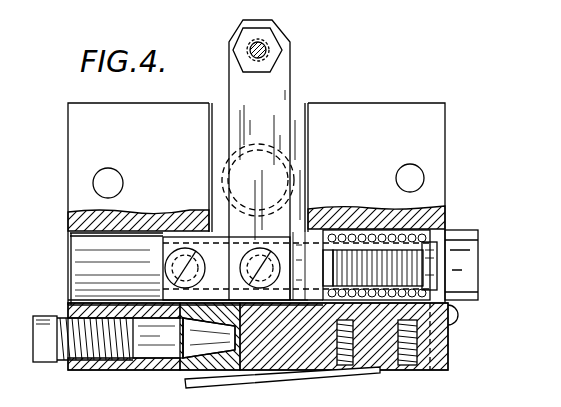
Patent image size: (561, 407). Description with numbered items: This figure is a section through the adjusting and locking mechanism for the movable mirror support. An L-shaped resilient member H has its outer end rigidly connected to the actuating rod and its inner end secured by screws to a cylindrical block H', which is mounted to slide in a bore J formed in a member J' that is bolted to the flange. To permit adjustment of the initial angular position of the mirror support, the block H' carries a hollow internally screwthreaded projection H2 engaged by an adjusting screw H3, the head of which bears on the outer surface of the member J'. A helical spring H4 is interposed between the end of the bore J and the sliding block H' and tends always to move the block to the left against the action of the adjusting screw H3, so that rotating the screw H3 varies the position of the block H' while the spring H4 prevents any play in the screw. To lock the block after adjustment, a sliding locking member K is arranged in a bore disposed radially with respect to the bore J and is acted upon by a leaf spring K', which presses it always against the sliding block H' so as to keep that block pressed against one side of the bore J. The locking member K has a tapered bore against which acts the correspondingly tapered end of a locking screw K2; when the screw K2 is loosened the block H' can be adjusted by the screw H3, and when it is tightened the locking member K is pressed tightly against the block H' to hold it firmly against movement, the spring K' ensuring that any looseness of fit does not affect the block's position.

The L-shaped resilient member H is at (279, 160).
The cylindrical block H' is at (371, 234).
The hollow internally screwthreaded projection H2 is at (368, 247).
The adjusting screw H3 is at (466, 251).
The helical spring H4 is at (418, 237).
The bore J is at (220, 269).
The member J' is at (229, 204).
The sliding locking member K is at (263, 355).
The leaf spring K' is at (282, 387).
The locking screw K2 is at (90, 360).